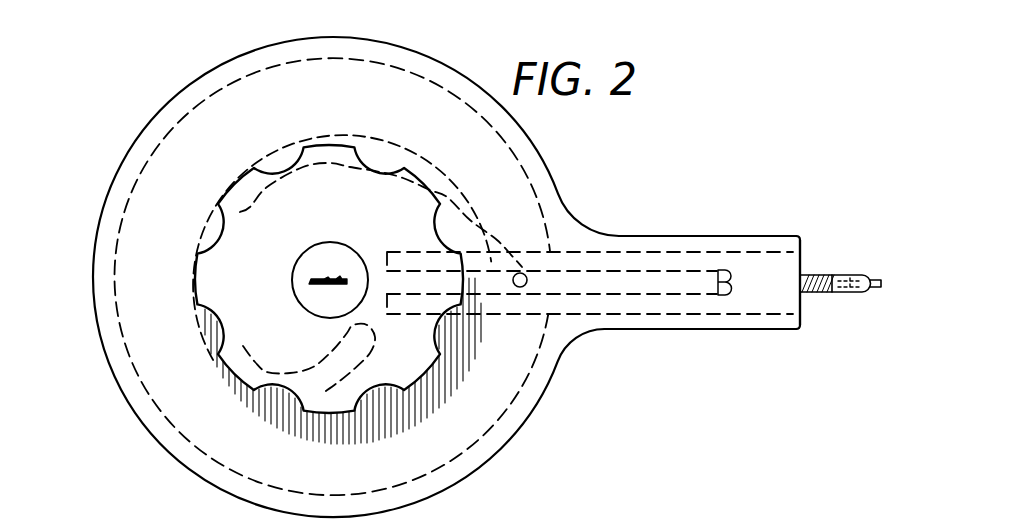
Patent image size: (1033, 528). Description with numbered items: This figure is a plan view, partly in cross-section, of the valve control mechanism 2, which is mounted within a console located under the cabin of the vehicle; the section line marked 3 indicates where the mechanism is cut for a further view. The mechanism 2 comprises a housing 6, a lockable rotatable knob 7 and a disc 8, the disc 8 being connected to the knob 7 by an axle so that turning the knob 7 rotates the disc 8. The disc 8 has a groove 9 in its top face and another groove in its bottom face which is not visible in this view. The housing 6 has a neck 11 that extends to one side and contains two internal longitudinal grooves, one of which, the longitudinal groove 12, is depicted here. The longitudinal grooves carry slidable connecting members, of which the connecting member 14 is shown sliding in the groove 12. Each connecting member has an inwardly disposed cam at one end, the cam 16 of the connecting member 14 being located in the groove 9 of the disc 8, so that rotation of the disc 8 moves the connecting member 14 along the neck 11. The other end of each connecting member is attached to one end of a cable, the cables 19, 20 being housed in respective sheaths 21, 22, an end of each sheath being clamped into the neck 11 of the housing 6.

The valve control mechanism 2 is at (168, 92).
The section line 3- 3 is at (97, 278).
The housing 6 is at (335, 247).
The lockable rotatable knob 7 is at (258, 224).
The disc 8 is at (117, 310).
The groove 9 is at (398, 150).
The neck 11 is at (730, 323).
The longitudinal groove 12 is at (646, 297).
The connecting member 14 is at (600, 283).
The cam 16 is at (525, 276).
The cable 19 is at (843, 292).
The cable 20 is at (882, 290).
The sheath 21 is at (812, 276).
The sheath 22 is at (860, 274).